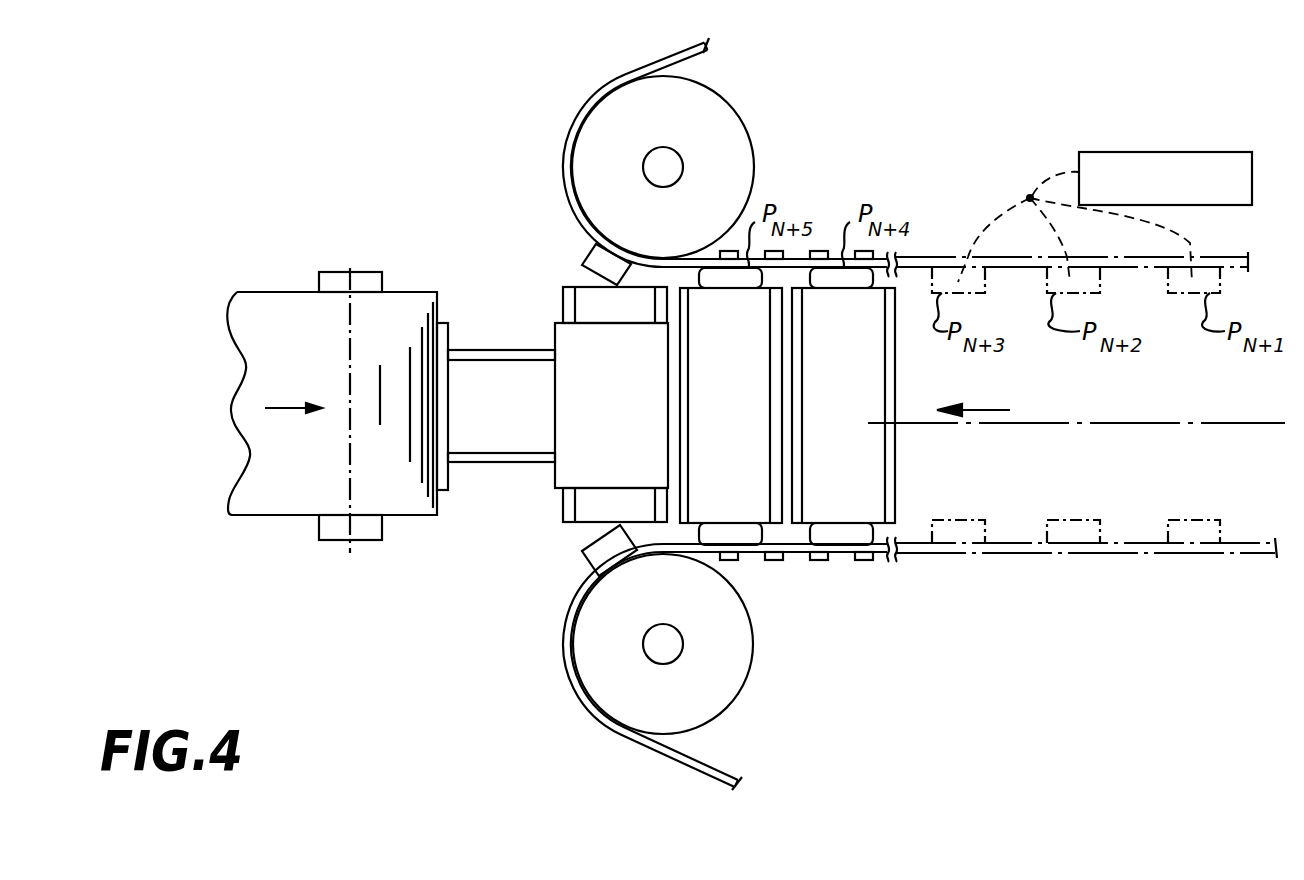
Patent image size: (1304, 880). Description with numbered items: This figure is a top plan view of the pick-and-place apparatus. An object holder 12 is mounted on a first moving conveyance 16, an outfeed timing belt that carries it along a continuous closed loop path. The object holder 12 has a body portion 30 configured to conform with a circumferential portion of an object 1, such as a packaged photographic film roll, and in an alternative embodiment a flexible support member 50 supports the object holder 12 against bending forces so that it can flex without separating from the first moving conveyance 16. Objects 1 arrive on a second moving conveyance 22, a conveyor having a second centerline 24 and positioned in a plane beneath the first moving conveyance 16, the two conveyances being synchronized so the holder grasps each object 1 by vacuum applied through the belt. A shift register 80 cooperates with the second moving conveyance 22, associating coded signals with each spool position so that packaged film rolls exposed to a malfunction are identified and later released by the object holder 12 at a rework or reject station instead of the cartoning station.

The first moving conveyance 16 is at (293, 292).
The object holder 12 is at (534, 344).
The flexible support member 50 is at (508, 360).
The body portion 30 is at (630, 424).
The object 1 is at (738, 422).
The second moving conveyance 22 is at (1018, 268).
The second centerline 24 is at (1071, 423).
The shift register 80 is at (1157, 152).